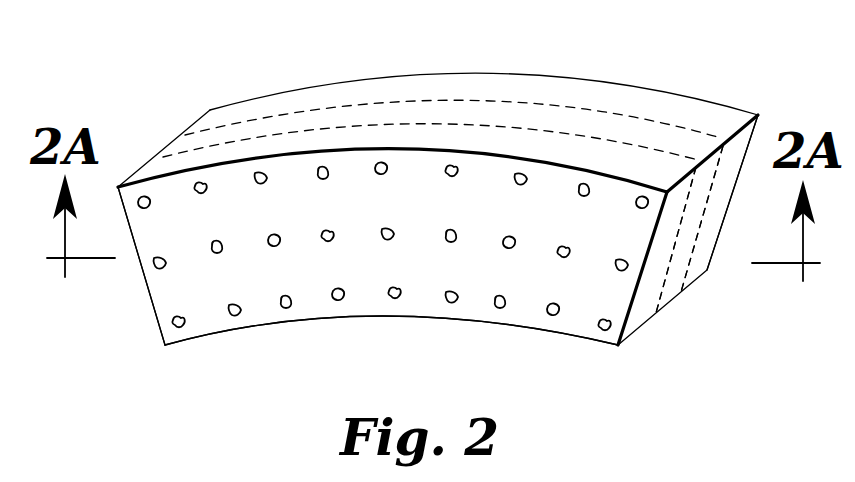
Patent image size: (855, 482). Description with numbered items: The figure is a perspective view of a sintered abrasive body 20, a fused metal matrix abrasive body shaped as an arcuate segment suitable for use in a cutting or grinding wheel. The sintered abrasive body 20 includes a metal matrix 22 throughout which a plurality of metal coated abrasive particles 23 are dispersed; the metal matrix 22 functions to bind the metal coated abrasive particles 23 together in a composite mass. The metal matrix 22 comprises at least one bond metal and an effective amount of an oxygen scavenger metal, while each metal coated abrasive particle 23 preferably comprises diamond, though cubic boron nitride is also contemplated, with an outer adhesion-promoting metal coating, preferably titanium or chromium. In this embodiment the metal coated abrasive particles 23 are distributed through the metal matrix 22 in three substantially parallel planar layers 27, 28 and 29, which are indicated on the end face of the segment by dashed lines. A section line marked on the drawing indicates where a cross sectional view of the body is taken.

The sintered abrasive body 20 is at (711, 58).
The metal matrix 22 is at (427, 302).
The metal coated abrasive particles 23 is at (283, 304).
The planar layer 27 is at (637, 327).
The planar layer 28 is at (670, 298).
The planar layer 29 is at (701, 270).